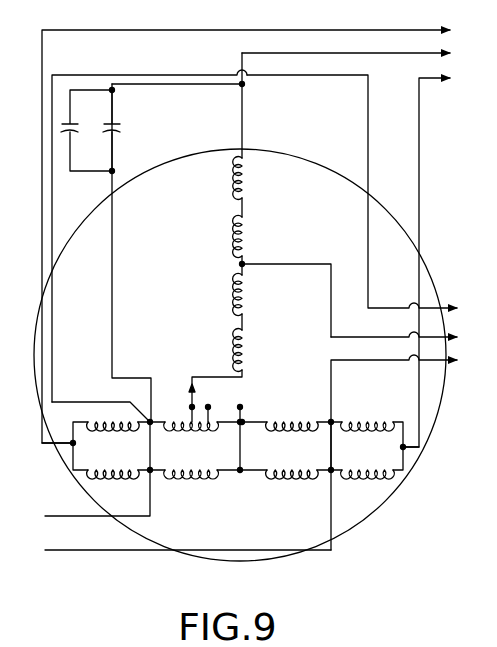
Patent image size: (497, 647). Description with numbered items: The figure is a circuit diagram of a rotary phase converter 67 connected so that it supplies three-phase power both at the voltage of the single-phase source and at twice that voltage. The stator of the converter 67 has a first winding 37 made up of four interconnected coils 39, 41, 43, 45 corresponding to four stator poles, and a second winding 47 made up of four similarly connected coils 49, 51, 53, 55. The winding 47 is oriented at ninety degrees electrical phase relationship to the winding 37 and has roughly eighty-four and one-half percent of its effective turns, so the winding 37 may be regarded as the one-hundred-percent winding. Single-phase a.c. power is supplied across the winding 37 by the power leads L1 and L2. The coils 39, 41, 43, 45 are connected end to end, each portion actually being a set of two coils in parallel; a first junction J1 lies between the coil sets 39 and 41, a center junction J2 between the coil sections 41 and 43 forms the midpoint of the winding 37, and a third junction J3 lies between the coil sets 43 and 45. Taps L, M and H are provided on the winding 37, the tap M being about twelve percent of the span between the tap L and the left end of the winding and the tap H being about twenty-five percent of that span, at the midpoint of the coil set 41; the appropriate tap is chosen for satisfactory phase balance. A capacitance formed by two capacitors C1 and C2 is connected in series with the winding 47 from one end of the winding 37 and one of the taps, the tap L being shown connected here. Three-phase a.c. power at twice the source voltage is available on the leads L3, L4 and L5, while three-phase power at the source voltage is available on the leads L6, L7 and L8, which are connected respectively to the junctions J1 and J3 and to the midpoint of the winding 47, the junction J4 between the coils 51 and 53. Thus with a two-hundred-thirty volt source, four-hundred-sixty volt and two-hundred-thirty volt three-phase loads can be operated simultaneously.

The first winding 37 is at (232, 524).
The coil 39 is at (138, 429).
The coil 41 is at (186, 430).
The coil 43 is at (313, 429).
The coil 45 is at (386, 430).
The second winding 47 is at (303, 224).
The coil 49 is at (233, 172).
The coil 51 is at (236, 232).
The coil 53 is at (248, 292).
The coil 55 is at (245, 342).
The rotary converter 67 is at (240, 344).
The capacitor C1 is at (80, 130).
The capacitor C2 is at (123, 130).
The first junction J1 is at (148, 420).
The center junction J2 is at (243, 421).
The third junction J3 is at (331, 421).
The midpoint junction J4 is at (245, 264).
The tap H is at (193, 406).
The tap M is at (209, 406).
The tap L is at (241, 406).
The power lead L1 is at (80, 550).
The power lead L2 is at (72, 516).
The lead L3 is at (440, 78).
The lead L4 is at (445, 30).
The lead L5 is at (446, 53).
The lead L6 is at (362, 191).
The lead L7 is at (407, 443).
The lead L8 is at (405, 323).